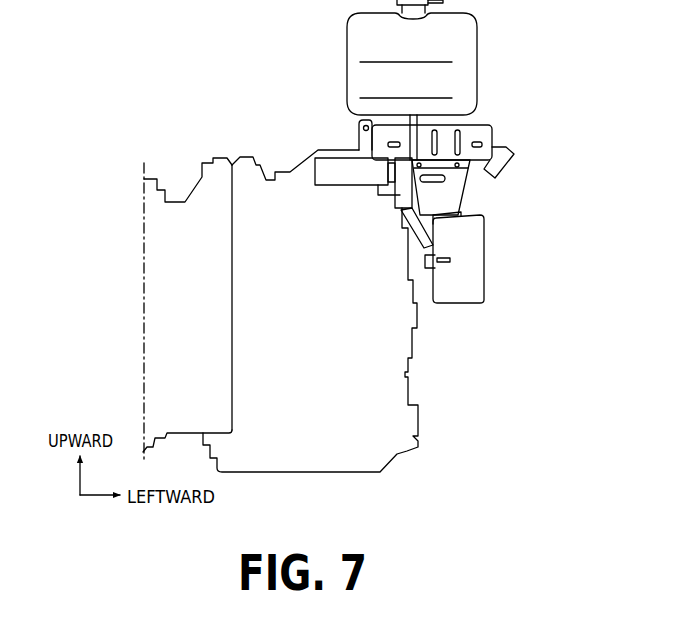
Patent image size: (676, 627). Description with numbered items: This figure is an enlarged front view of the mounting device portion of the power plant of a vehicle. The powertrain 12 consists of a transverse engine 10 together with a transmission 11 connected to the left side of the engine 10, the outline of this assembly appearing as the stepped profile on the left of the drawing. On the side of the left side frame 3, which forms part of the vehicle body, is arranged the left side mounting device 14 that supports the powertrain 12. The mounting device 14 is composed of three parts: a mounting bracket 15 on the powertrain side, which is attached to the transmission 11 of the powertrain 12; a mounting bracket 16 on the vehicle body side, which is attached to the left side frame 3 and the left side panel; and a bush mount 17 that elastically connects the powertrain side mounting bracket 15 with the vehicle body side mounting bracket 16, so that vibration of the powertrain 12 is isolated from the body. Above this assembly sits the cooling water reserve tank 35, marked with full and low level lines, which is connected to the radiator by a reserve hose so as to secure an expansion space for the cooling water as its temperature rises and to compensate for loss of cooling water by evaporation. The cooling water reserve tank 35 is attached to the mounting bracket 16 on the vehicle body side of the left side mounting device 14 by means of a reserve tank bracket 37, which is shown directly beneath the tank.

The left side frame 3 is at (473, 290).
The engine 10 is at (215, 180).
The transmission 11 is at (258, 185).
The powertrain 12 is at (278, 110).
The left side mounting device 14 is at (512, 165).
The mounting bracket on powertrain side 15 is at (337, 157).
The mounting bracket on vehicle body side 16 is at (468, 194).
The bush mount 17 is at (394, 205).
The cooling water reserve tank 35 is at (460, 40).
The reserve tank bracket 37 is at (494, 125).